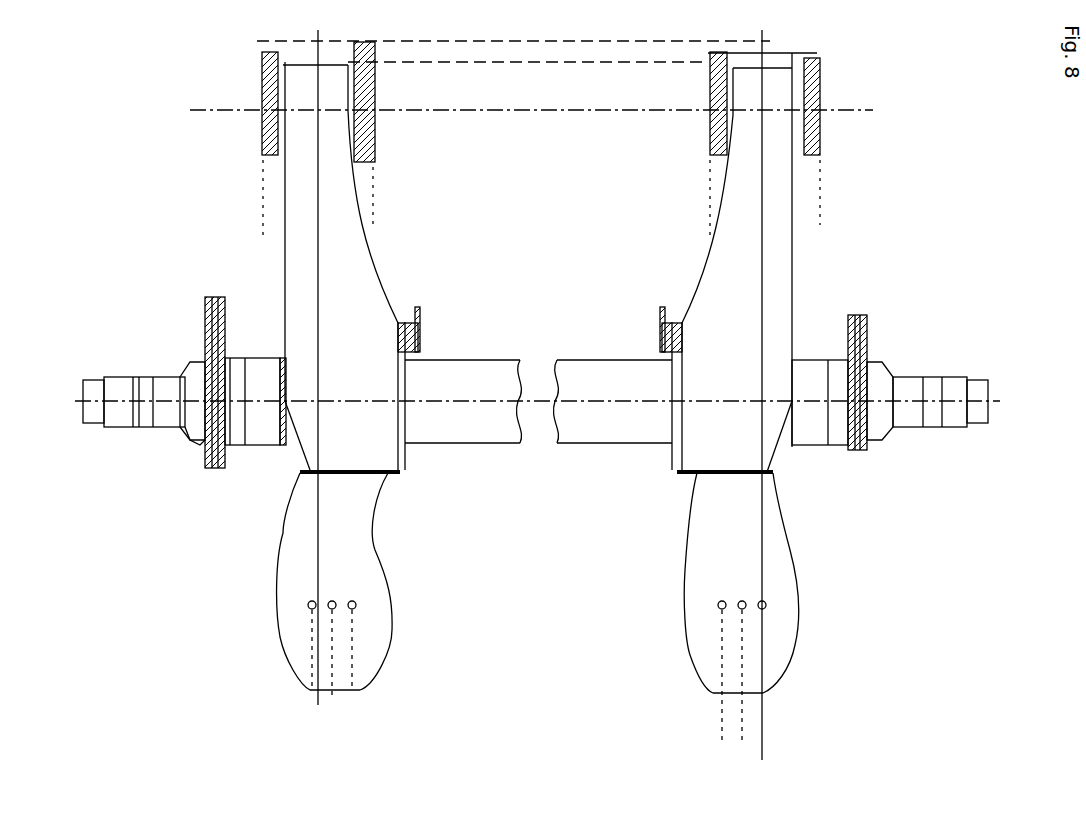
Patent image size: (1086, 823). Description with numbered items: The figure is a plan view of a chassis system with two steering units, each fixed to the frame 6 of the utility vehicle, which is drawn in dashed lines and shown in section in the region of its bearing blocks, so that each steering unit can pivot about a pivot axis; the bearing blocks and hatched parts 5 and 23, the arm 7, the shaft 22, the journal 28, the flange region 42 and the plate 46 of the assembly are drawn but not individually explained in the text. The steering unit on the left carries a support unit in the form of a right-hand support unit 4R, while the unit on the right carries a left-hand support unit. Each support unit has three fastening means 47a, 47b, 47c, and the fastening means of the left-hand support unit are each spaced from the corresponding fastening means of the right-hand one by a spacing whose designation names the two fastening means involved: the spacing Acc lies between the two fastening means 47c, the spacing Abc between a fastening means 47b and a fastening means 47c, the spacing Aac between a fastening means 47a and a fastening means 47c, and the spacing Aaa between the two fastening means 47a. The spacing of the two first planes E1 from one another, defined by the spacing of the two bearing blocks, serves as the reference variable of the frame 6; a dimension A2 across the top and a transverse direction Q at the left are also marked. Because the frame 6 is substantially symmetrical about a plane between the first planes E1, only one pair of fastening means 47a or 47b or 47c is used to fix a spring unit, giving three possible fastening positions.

The bearing / guide block 5 is at (387, 100).
The frame 6 is at (805, 44).
The swing arm 7 is at (395, 290).
The shaft 22 is at (672, 462).
The bearing bushing 23 is at (790, 97).
The axle journal 28 is at (793, 437).
The bearing flange 42 is at (705, 478).
The mounting plate 46 is at (346, 581).
The fastening means 47a is at (314, 602).
The fastening means 47b is at (334, 602).
The fastening means 47c is at (354, 602).
The right-hand support unit 4R is at (388, 607).
The transverse direction Q is at (137, 234).
The first plane E1 is at (320, 178).
The distance A2 is at (318, 33).
The spacing Acc is at (722, 697).
The spacing Abc is at (333, 713).
The spacing Aac is at (314, 737).
The spacing Aaa is at (762, 758).